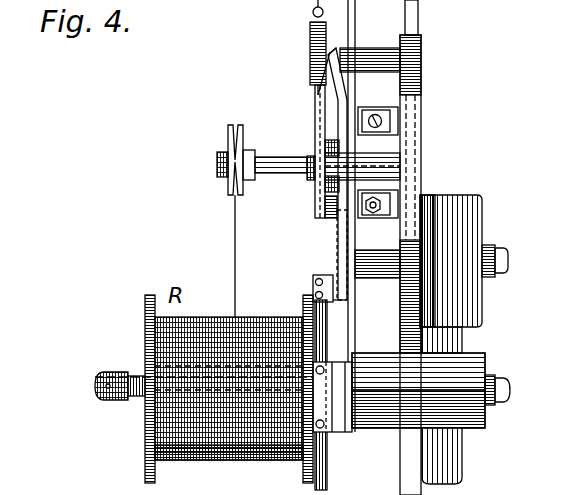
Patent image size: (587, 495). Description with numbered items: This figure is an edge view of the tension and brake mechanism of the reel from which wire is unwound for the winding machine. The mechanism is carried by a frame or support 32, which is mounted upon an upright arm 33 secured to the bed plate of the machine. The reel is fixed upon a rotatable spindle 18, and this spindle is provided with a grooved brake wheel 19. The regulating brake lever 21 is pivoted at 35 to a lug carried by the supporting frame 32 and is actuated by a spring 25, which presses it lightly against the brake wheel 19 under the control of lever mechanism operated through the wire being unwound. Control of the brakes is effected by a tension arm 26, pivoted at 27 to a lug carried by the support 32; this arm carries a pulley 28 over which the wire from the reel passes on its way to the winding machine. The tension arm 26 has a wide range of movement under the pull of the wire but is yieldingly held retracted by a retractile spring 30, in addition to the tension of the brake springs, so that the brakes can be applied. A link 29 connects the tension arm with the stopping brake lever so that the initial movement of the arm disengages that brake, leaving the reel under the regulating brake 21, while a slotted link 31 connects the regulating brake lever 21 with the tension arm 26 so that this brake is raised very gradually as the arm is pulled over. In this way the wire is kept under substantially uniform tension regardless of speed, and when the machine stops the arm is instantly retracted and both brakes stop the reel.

The rotatable spindle 18 is at (155, 377).
The grooved brake wheel 19 is at (321, 458).
The regulating brake lever 21 is at (355, 96).
The spring 25 is at (376, 120).
The tension arm 26 is at (322, 178).
The pivot 27 is at (318, 160).
The pulley 28 is at (229, 188).
The link 29 is at (338, 80).
The retractile spring 30 is at (312, 66).
The slotted link 31 is at (340, 214).
The frame or support 32 is at (421, 170).
The upright arm 33 is at (455, 472).
The pivot 35 is at (345, 50).